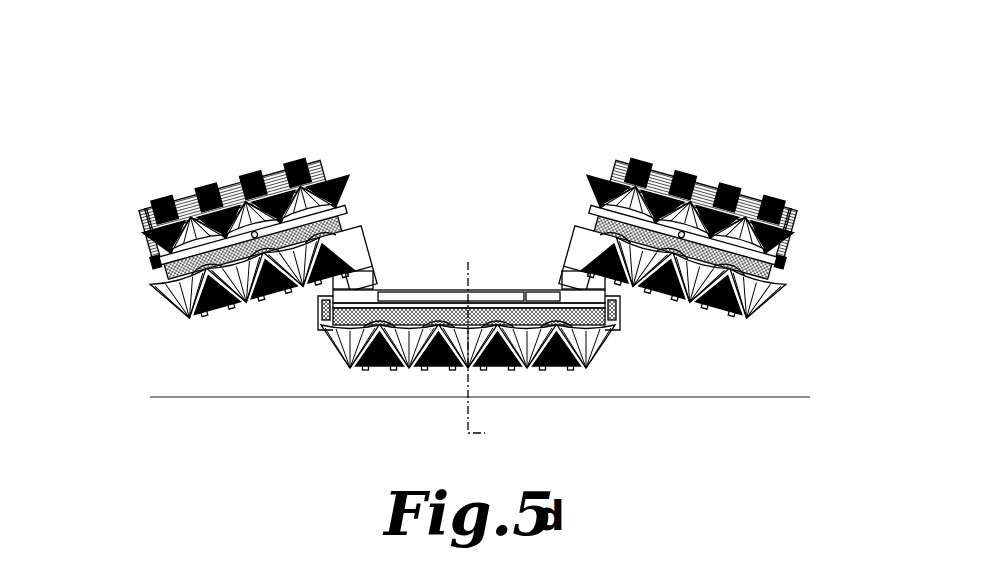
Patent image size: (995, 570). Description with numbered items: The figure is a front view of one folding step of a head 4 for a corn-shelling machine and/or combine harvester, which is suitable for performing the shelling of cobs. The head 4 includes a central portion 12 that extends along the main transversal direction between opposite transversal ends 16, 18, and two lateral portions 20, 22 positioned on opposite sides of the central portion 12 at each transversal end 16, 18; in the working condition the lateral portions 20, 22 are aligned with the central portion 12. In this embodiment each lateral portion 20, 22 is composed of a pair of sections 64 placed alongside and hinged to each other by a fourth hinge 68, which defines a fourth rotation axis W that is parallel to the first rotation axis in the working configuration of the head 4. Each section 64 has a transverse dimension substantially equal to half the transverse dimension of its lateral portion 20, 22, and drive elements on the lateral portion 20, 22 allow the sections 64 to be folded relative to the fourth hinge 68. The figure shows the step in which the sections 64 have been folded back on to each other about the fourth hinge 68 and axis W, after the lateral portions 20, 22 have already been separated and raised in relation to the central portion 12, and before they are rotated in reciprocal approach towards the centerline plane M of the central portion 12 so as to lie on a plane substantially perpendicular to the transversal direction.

The head 4 is at (407, 146).
The central portion 12 is at (454, 288).
The transversal end 16 is at (315, 316).
The transversal end 18 is at (613, 318).
The lateral portion 20 is at (234, 181).
The lateral portion 22 is at (701, 166).
The sections 64 is at (168, 203).
The fourth hinge 68 is at (147, 296).
The fourth rotation axis W is at (163, 258).
The centerline plane M is at (493, 425).